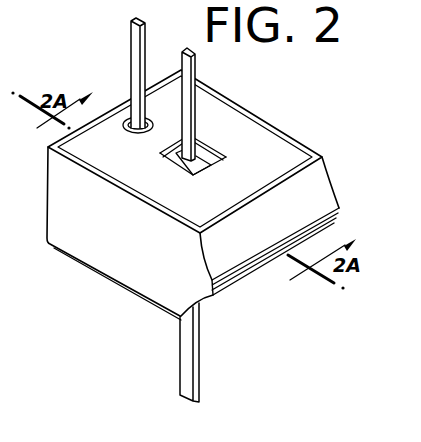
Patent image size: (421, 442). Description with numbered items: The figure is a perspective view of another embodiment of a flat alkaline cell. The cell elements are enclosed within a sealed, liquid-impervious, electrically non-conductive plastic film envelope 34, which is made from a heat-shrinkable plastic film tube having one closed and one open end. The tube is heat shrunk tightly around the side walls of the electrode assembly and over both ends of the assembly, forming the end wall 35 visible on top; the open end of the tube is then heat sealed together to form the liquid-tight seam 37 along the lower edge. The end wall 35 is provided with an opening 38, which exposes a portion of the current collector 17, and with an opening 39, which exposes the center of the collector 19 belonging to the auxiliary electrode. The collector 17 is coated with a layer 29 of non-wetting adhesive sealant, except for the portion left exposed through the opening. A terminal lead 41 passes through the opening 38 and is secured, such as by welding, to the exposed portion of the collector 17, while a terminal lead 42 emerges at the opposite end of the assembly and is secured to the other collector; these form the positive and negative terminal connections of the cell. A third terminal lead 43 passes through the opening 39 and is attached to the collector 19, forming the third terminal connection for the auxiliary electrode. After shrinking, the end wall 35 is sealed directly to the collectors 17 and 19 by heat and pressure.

The current collector 17 is at (195, 170).
The current collector 19 is at (135, 133).
The layer of non-wetting adhesive sealant 29 is at (180, 162).
The plastic film envelope 34 is at (100, 258).
The end wall 35 is at (282, 152).
The liquid-tight seam 37 is at (347, 202).
The opening 38 is at (212, 165).
The opening 39 is at (131, 112).
The terminal lead 41 is at (197, 95).
The terminal lead 42 is at (198, 338).
The third terminal lead 43 is at (146, 52).